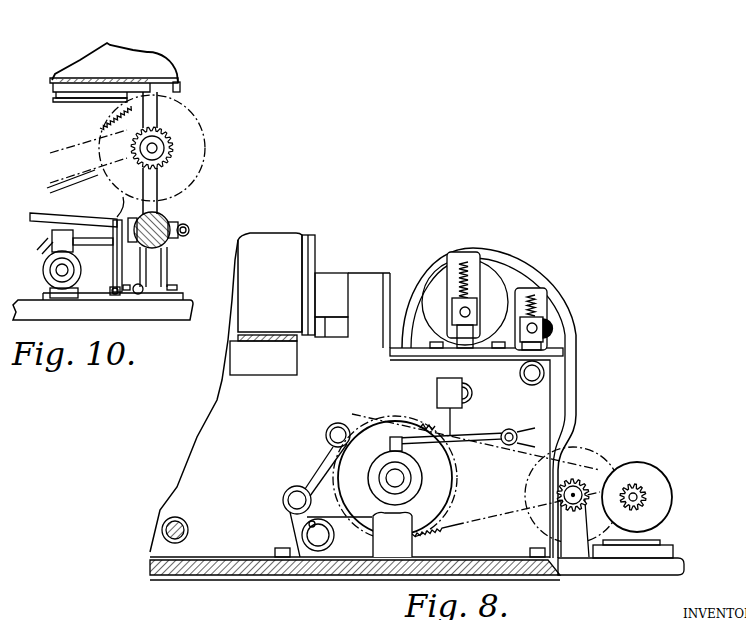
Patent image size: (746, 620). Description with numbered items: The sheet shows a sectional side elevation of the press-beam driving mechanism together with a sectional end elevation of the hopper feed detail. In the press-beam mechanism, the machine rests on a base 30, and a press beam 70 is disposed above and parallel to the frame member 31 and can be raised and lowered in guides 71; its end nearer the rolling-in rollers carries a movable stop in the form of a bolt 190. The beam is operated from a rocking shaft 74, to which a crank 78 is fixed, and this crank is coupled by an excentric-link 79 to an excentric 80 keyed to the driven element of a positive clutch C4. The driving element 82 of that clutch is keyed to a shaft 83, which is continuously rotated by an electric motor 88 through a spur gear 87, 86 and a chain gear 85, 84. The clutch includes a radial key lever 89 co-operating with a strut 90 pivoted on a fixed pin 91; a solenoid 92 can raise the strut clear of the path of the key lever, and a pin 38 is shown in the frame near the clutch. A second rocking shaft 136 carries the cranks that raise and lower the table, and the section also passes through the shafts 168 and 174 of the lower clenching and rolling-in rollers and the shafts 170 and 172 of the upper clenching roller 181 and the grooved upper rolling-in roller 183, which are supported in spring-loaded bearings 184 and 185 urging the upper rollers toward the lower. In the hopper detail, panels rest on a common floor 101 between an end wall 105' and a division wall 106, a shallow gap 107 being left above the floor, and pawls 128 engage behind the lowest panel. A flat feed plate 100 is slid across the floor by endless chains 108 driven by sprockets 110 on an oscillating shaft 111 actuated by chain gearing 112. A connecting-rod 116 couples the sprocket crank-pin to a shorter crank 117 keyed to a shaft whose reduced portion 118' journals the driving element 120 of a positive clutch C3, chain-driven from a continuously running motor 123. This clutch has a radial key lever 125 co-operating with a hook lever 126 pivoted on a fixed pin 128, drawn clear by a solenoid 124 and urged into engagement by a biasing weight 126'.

In FIG. 10, the feed plate 100 is at (123, 79).
In FIG. 10, the hopper floor 101 is at (68, 90).
In FIG. 8, the hopper floor 101 is at (258, 339).
In FIG. 10, the hopper end wall 105' is at (197, 79).
In FIG. 10, the division wall 106 is at (137, 80).
In FIG. 10, the shallow gap 107 is at (68, 82).
In FIG. 10, the endless chain 108 is at (93, 103).
In FIG. 10, the sprocket 110 is at (188, 114).
In FIG. 10, the oscillating shaft 111 is at (156, 148).
In FIG. 10, the chain gearing sprocket 112 is at (164, 137).
In FIG. 10, the connecting-rod 116 is at (50, 213).
In FIG. 10, the crank 117 is at (180, 238).
In FIG. 10, the reduced shaft portion 118' is at (170, 241).
In FIG. 10, the clutch driving element 120 is at (181, 223).
In FIG. 10, the motor 123 is at (44, 270).
In FIG. 10, the solenoid 124 is at (52, 235).
In FIG. 10, the key lever 125 is at (127, 197).
In FIG. 10, the hook lever 126 is at (103, 256).
In FIG. 10, the biasing weight 126' is at (165, 308).
In FIG. 10, the fixed pin 128 is at (115, 299).
In FIG. 10, the positive clutch C3 is at (172, 210).
In FIG. 8, the base 30 is at (535, 568).
In FIG. 8, the frame member 31 is at (218, 403).
In FIG. 8, the pin 38 is at (340, 423).
In FIG. 8, the press beam 70 is at (330, 270).
In FIG. 8, the guide 71 is at (407, 272).
In FIG. 8, the rocking shaft 74 is at (310, 537).
In FIG. 8, the crank 78 is at (306, 520).
In FIG. 8, the excentric-link 79 is at (318, 476).
In FIG. 8, the excentric 80 is at (342, 447).
In FIG. 8, the clutch driving element 82 is at (383, 474).
In FIG. 8, the shaft 83 is at (389, 484).
In FIG. 8, the chain gear sprocket 84 is at (445, 527).
In FIG. 8, the chain gear sprocket 85 is at (574, 484).
In FIG. 8, the spur gear wheel 86 is at (592, 456).
In FIG. 8, the spur gear pinion 87 is at (638, 490).
In FIG. 8, the electric motor 88 is at (641, 462).
In FIG. 8, the radial key lever 89 is at (402, 437).
In FIG. 8, the strut 90 is at (480, 439).
In FIG. 8, the fixed pin 91 is at (513, 431).
In FIG. 8, the solenoid 92 is at (456, 385).
In FIG. 8, the rocking shaft 136 is at (182, 522).
In FIG. 8, the shaft 168 is at (535, 374).
In FIG. 8, the shaft 170 is at (536, 328).
In FIG. 8, the shaft 172 is at (478, 300).
In FIG. 8, the shaft 174 is at (474, 393).
In FIG. 8, the upper clenching roller 181 is at (553, 327).
In FIG. 8, the upper rolling-in roller 183 is at (442, 272).
In FIG. 8, the spring-loaded bearing 184 is at (546, 308).
In FIG. 8, the spring-loaded bearing 185 is at (468, 310).
In FIG. 8, the bolt 190 is at (340, 330).
In FIG. 8, the positive clutch C4 is at (420, 473).